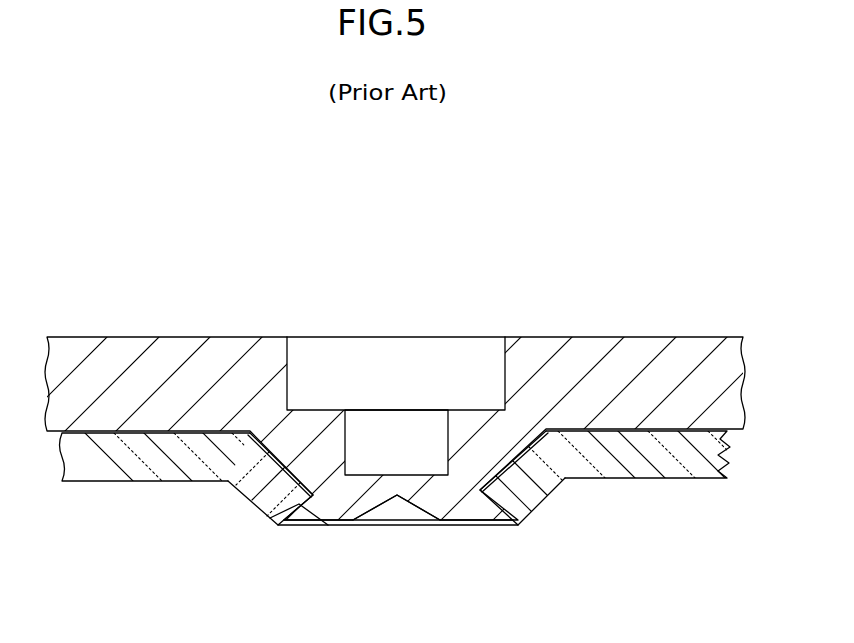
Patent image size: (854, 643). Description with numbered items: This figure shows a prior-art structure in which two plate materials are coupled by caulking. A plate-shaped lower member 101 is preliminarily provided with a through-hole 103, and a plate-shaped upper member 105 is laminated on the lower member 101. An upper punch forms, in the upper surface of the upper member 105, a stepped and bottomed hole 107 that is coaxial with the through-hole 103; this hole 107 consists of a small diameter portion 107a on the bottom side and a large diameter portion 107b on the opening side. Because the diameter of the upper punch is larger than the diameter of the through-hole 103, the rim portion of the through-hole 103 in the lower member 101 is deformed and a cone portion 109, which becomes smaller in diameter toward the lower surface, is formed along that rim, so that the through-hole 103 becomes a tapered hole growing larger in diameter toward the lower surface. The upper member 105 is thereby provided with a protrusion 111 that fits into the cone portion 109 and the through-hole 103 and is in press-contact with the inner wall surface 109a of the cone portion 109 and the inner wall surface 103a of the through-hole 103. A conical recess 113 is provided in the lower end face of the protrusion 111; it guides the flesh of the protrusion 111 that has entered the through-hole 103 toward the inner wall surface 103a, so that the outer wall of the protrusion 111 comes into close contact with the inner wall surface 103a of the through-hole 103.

The lower member 101 is at (593, 458).
The through-hole 103 is at (393, 555).
The inner wall surface of the through-hole 103a is at (294, 514).
The upper member 105 is at (535, 357).
The stepped and bottomed hole 107 is at (396, 337).
The small diameter portion 107a is at (352, 435).
The large diameter portion 107b is at (290, 380).
The cone portion 109 is at (233, 505).
The inner wall surface of the cone portion 109a is at (288, 463).
The protrusion 111 is at (470, 507).
The conical recess 113 is at (398, 507).